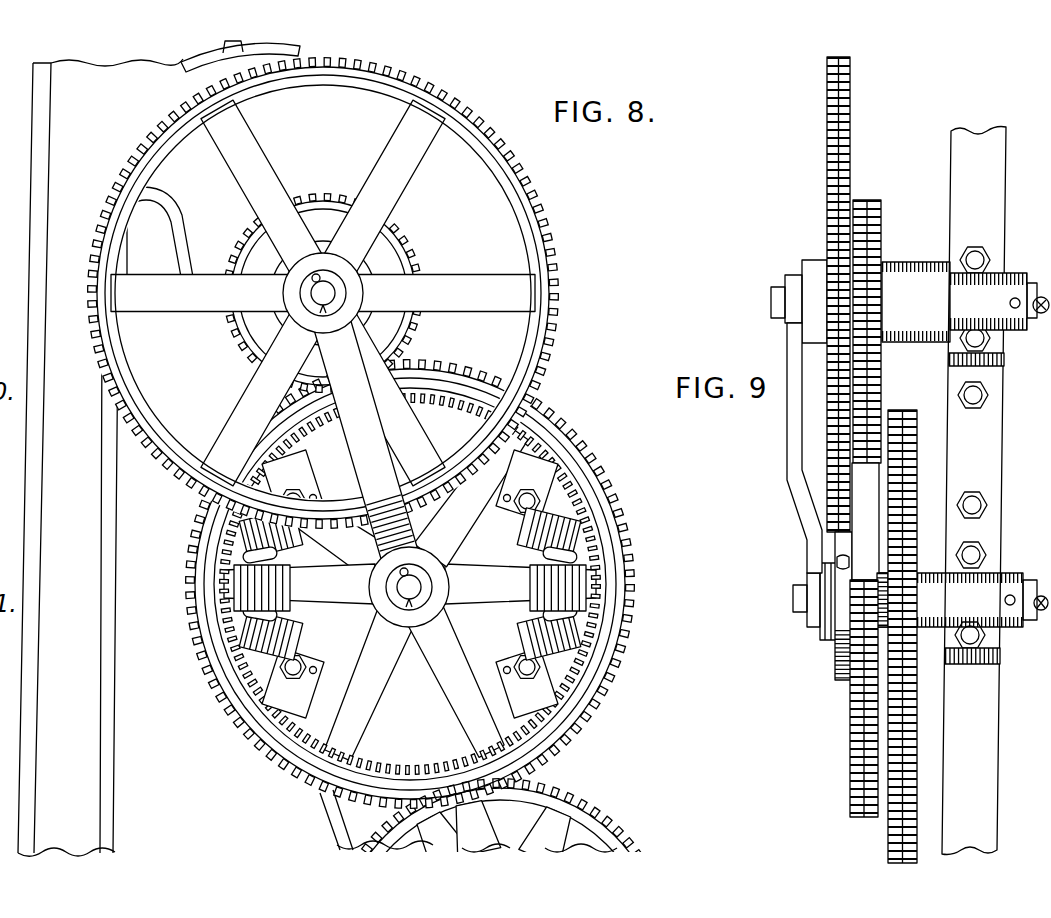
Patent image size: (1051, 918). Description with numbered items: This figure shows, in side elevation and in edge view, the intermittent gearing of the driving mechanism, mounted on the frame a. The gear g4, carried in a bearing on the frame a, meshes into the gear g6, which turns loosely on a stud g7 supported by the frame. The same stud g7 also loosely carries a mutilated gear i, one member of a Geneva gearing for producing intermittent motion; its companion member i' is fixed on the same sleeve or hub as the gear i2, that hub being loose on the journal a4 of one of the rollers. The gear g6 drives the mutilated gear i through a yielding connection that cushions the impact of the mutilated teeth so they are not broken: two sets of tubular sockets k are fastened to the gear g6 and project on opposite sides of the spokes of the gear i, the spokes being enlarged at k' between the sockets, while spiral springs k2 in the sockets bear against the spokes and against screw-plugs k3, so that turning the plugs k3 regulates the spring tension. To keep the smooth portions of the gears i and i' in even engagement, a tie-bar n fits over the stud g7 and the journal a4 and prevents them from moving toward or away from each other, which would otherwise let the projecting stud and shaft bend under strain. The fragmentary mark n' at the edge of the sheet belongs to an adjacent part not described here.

In FIG. 8, the frame a is at (185, 448).
In FIG. 9, the frame a is at (974, 491).
In FIG. 8, the journal of the roller a4 is at (333, 293).
In FIG. 9, the journal of the roller a4 is at (776, 300).
In FIG. 8, the tie-bar n is at (366, 440).
In FIG. 9, the tie-bar n is at (786, 448).
In FIG. 8, the rod n' is at (8, 240).
In FIG. 8, the mutilated gear i is at (410, 584).
In FIG. 9, the mutilated gear i is at (801, 594).
In FIG. 8, the Geneva gear member i' is at (333, 293).
In FIG. 9, the Geneva gear member i' is at (882, 330).
In FIG. 8, the gear i2 is at (547, 203).
In FIG. 9, the gear i2 is at (832, 166).
In FIG. 8, the tubular sockets k is at (401, 583).
In FIG. 8, the enlarged spoke portions k' is at (408, 588).
In FIG. 8, the spiral springs k2 is at (245, 550).
In FIG. 8, the screw-plugs k3 is at (548, 535).
In FIG. 8, the gear g4 is at (570, 797).
In FIG. 9, the gear g4 is at (901, 823).
In FIG. 8, the gear g6 is at (440, 755).
In FIG. 9, the gear g6 is at (915, 702).
In FIG. 8, the stud g7 is at (409, 593).
In FIG. 9, the stud g7 is at (800, 594).